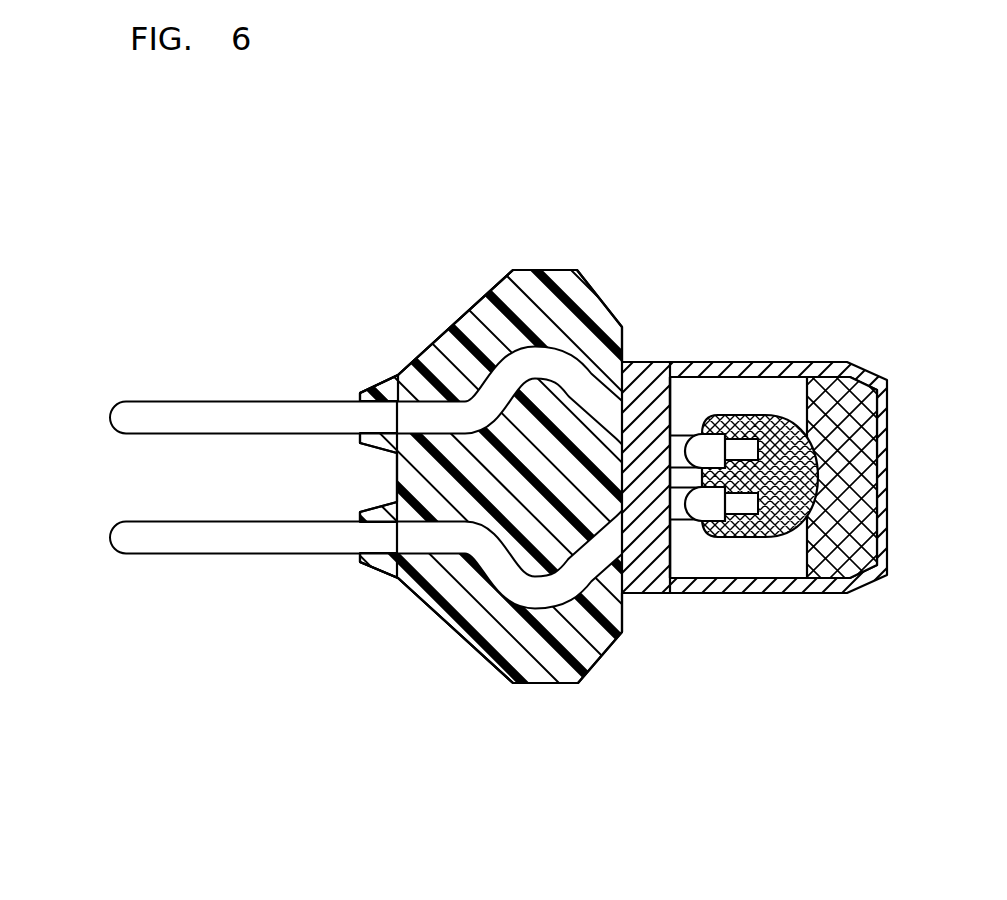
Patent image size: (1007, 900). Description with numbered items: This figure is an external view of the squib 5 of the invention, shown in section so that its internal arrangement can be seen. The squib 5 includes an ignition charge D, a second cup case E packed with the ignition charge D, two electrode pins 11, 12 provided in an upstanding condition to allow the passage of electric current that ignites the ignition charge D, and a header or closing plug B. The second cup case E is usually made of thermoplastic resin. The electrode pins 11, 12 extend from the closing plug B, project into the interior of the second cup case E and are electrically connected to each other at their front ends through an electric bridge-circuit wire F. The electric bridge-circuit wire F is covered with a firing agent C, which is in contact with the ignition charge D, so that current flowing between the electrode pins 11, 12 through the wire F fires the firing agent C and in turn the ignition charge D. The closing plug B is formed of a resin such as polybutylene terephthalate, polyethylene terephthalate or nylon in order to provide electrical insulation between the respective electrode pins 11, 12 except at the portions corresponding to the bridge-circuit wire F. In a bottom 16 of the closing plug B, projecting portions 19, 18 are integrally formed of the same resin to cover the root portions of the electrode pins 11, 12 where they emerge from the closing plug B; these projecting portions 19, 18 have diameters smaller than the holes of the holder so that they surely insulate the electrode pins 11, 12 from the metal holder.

The squib 5 is at (459, 740).
The electrode pin 11 is at (113, 410).
The electrode pin 12 is at (113, 548).
The bottom of the closing plug 16 is at (397, 378).
The projecting portion 18 is at (362, 560).
The projecting portion 19 is at (357, 398).
The closing plug B is at (445, 343).
The firing agent C is at (738, 417).
The ignition charge D is at (825, 393).
The second cup case E is at (714, 592).
The electric bridge-circuit wire F is at (779, 497).